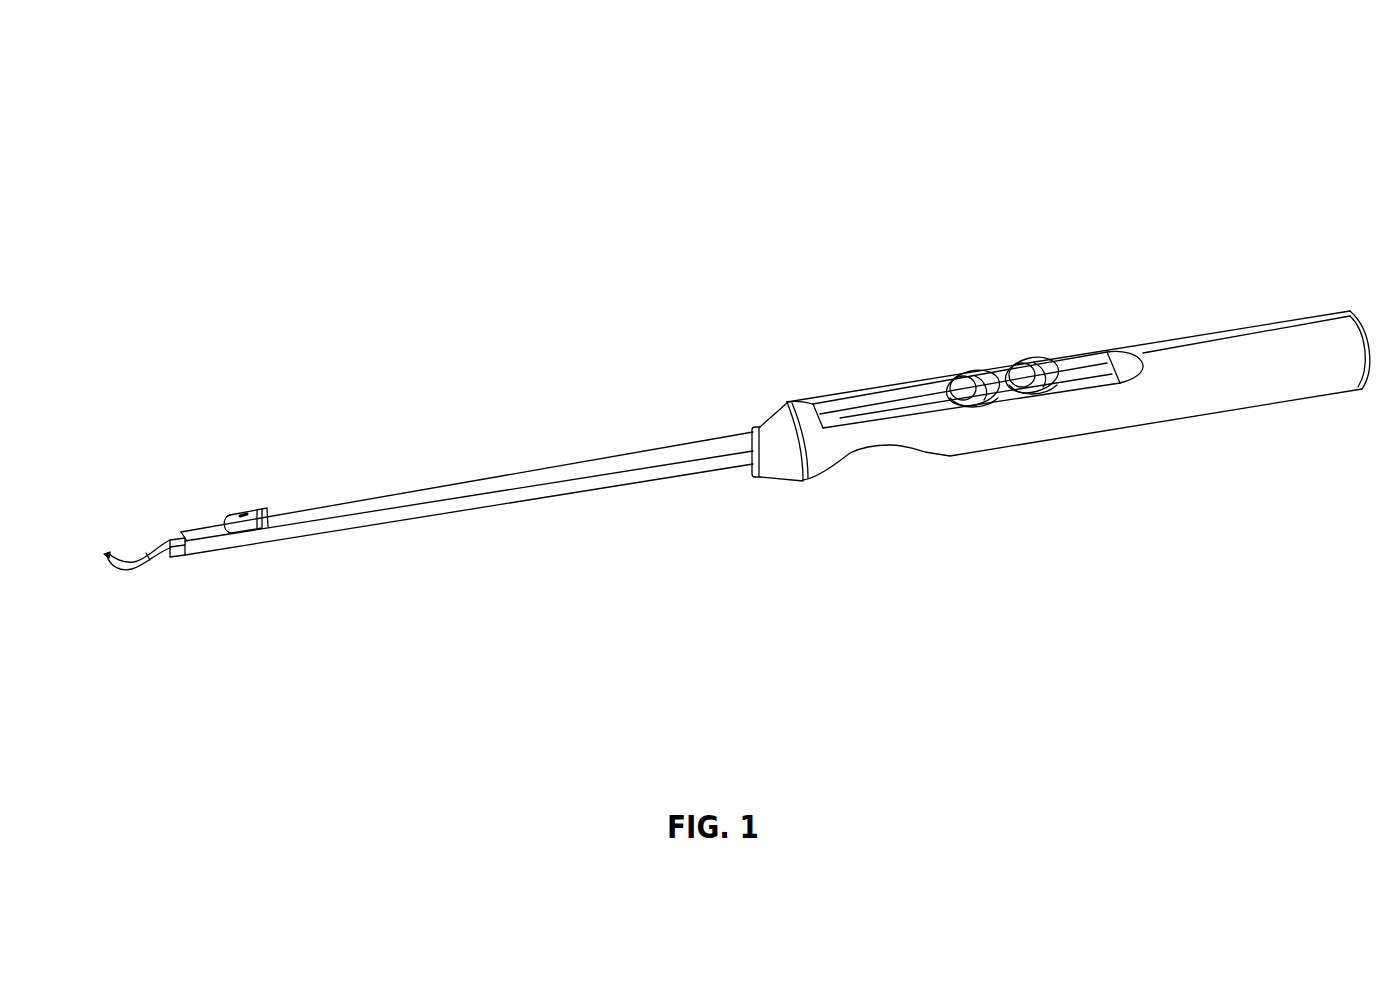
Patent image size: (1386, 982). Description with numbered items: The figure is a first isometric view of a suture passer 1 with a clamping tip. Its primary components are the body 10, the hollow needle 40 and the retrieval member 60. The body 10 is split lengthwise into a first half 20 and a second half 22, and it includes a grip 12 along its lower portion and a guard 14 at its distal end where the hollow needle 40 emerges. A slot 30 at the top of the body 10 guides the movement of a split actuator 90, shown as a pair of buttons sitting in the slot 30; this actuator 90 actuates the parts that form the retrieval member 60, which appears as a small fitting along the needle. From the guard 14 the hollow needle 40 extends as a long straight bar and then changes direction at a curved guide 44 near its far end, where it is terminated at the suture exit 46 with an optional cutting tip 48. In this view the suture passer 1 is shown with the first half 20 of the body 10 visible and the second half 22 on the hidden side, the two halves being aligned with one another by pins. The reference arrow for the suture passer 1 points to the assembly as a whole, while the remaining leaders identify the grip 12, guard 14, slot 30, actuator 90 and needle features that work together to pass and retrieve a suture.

The suture passer 1 is at (1105, 126).
The body 10 is at (1190, 314).
The grip 12 is at (1138, 410).
The guard 14 is at (820, 467).
The first half 20 is at (1313, 317).
The second half 22 is at (1323, 373).
The slot 30 is at (920, 397).
The hollow needle 40 is at (545, 496).
The curved guide 44 is at (129, 570).
The suture exit 46 is at (110, 552).
The cutting tip 48 is at (103, 559).
The retrieval member 60 is at (528, 462).
The split actuator 90 is at (933, 378).